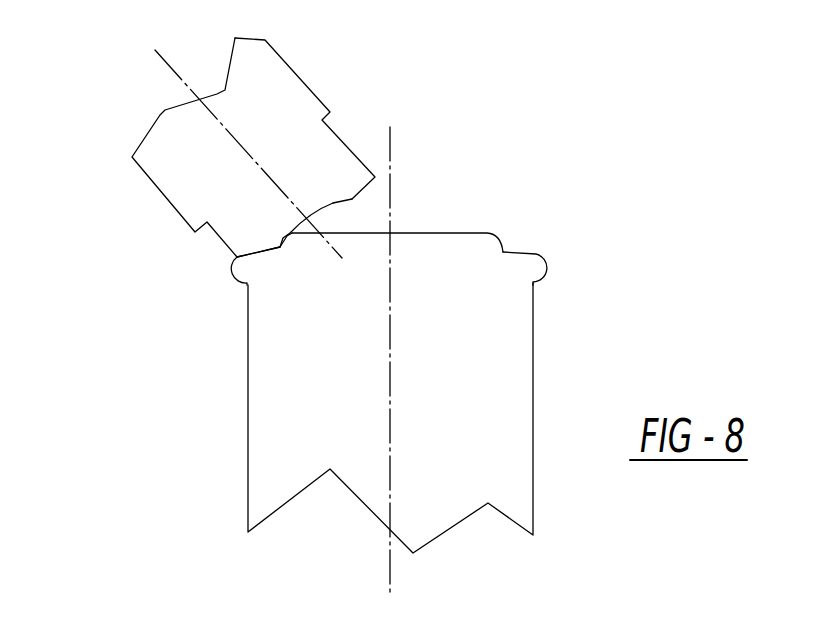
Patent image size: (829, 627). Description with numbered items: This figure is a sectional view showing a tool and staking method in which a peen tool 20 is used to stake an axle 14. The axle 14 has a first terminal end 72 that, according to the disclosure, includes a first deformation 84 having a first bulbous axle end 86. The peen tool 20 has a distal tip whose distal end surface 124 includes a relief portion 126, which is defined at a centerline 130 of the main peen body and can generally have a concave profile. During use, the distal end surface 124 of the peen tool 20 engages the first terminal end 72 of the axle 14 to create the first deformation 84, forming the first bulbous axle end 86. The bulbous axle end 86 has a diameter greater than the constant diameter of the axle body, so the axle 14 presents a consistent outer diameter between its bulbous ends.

The axle 14 is at (475, 380).
The peen tool 20 is at (326, 141).
The first terminal end 72 is at (452, 190).
The first deformation 84 is at (540, 237).
The first bulbous axle end 86 is at (543, 267).
The distal end surface 124 is at (370, 192).
The relief portion 126 is at (337, 205).
The centerline 130 is at (172, 68).